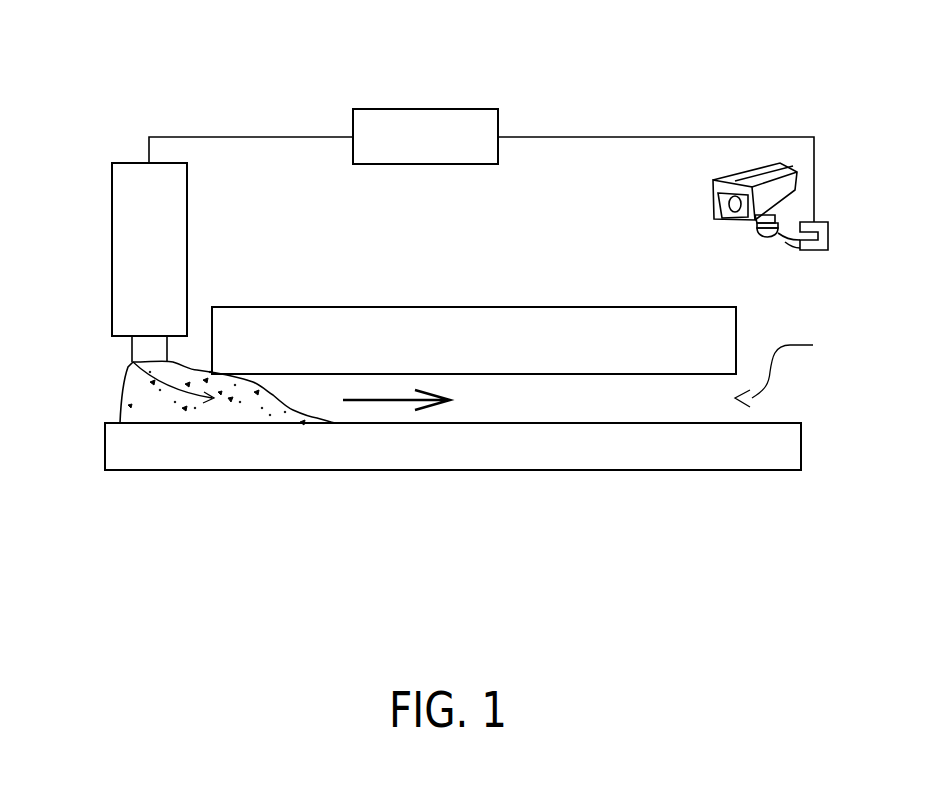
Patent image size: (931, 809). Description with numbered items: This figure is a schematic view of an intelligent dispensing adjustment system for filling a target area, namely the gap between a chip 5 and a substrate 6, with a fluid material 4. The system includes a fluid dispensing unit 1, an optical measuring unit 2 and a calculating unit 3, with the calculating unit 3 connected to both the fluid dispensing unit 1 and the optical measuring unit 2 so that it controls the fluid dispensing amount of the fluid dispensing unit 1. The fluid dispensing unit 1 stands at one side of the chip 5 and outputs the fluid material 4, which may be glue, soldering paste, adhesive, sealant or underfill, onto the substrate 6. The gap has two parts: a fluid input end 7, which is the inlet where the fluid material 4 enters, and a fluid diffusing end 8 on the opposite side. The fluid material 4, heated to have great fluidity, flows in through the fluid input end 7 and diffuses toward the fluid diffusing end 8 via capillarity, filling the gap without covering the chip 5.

The fluid dispensing unit 1 is at (135, 205).
The optical measuring unit 2 is at (708, 197).
The calculating unit 3 is at (428, 124).
The fluid material 4 is at (122, 398).
The chip 5 is at (528, 331).
The substrate 6 is at (421, 455).
The fluid input end 7 is at (133, 362).
The fluid diffusing end 8 is at (784, 372).